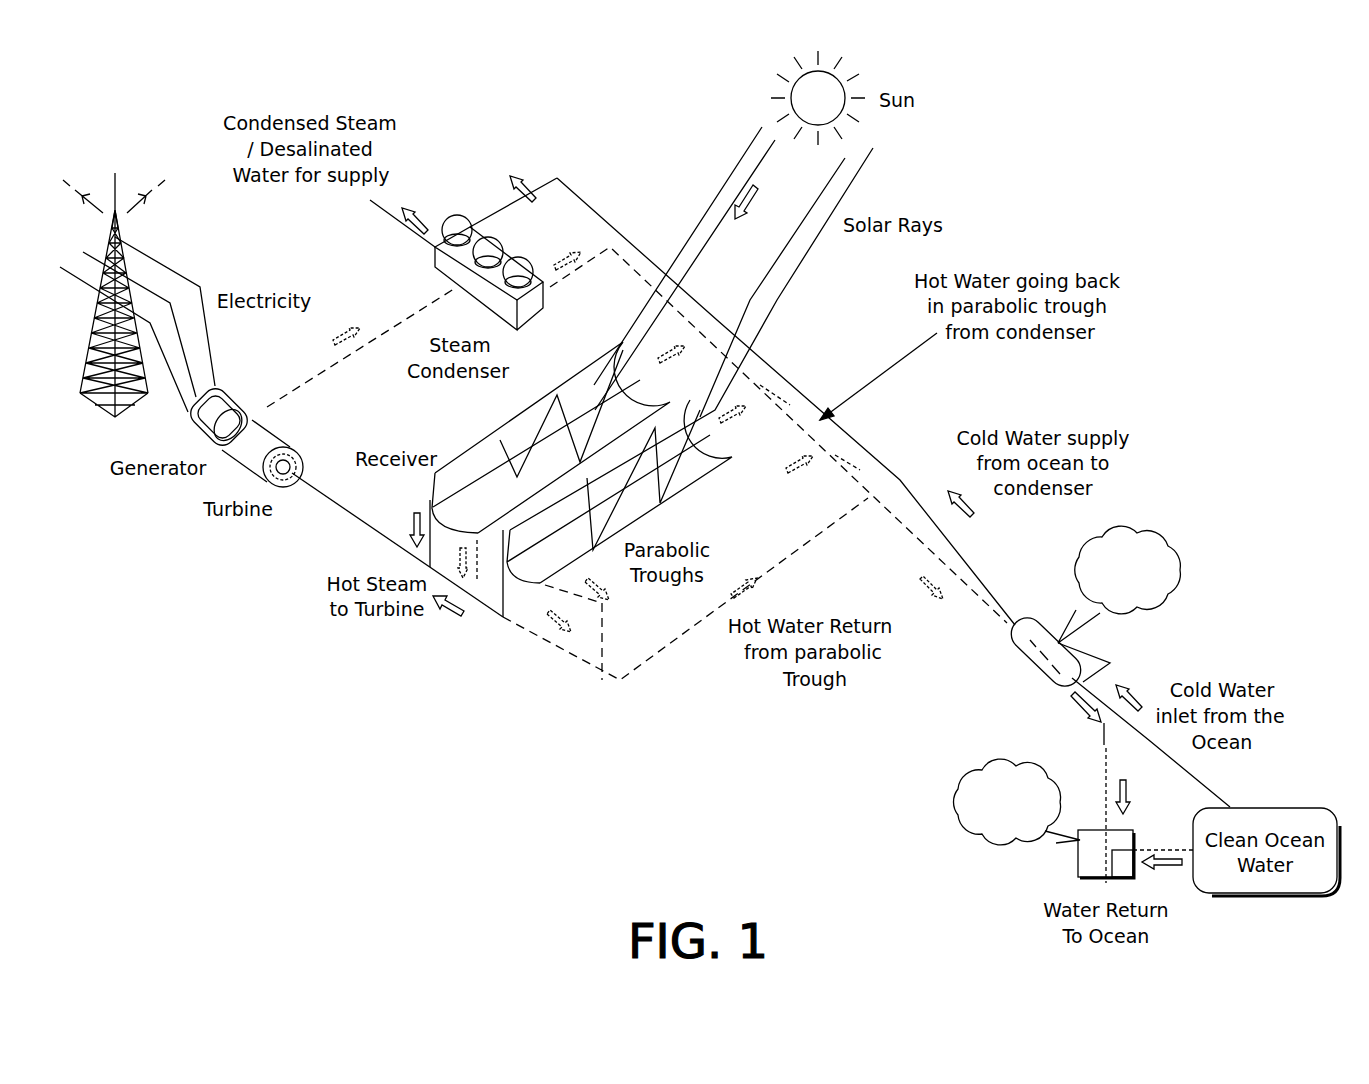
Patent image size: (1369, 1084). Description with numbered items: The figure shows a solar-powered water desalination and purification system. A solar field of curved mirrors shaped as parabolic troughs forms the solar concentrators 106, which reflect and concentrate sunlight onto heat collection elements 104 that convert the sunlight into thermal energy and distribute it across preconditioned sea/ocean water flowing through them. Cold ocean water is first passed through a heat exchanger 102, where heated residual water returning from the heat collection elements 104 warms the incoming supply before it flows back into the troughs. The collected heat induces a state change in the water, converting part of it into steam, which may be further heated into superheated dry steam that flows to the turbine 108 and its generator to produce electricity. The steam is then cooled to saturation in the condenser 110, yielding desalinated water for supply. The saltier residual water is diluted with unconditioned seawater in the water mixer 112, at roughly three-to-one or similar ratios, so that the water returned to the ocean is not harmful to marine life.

The heat exchanger 102 is at (1150, 530).
The heat collection elements 104 is at (487, 460).
The solar concentrators 106 is at (593, 372).
The turbine 108 is at (264, 413).
The condenser 110 is at (485, 235).
The water mixer 112 is at (957, 800).